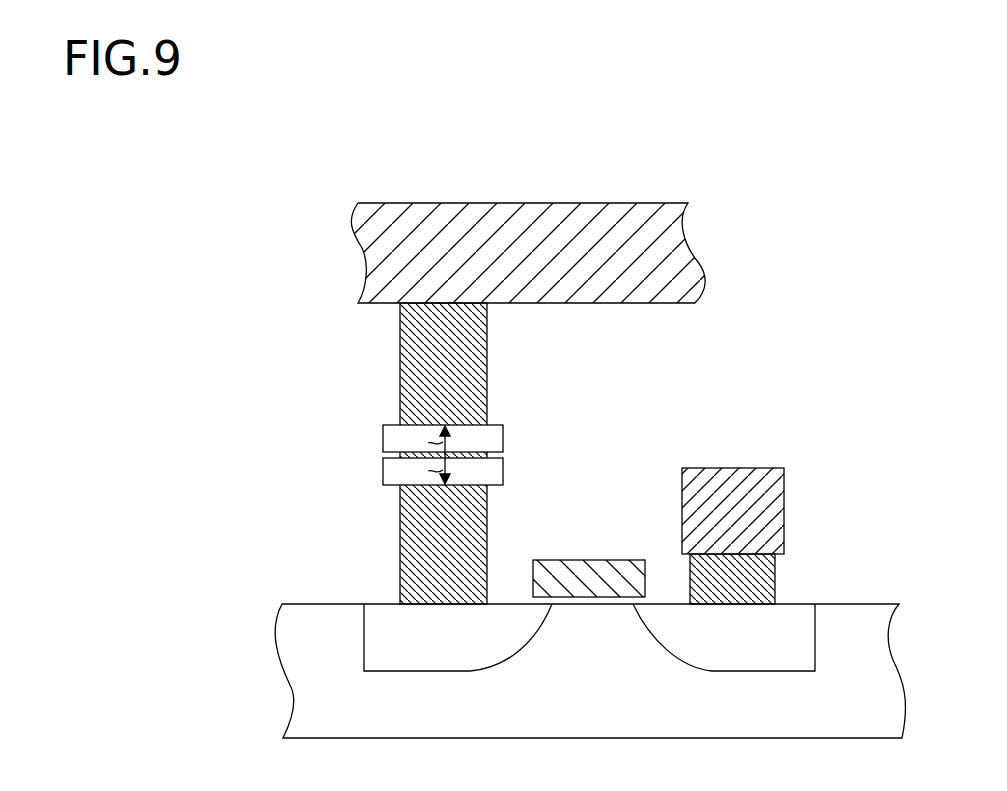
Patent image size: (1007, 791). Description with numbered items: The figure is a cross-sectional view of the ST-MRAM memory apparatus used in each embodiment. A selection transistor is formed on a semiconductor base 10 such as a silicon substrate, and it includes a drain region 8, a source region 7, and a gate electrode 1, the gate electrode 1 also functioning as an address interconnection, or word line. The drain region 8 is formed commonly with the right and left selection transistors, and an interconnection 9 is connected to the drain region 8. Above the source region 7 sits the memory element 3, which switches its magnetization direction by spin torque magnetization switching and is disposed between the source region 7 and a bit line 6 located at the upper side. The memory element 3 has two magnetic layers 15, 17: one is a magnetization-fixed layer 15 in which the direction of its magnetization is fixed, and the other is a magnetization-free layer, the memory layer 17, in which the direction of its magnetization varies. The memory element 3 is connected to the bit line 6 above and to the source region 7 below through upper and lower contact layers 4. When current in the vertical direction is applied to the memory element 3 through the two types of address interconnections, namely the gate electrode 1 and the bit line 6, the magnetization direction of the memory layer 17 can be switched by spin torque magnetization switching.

The gate electrode 1 is at (616, 572).
The memory element 3 is at (467, 456).
The contact layer 4 is at (412, 340).
The bit line 6 is at (385, 253).
The source region 7 is at (393, 640).
The drain region 8 is at (792, 642).
The interconnection 9 is at (762, 504).
The semiconductor base 10 is at (867, 707).
The magnetization-fixed layer 15 is at (503, 472).
The memory layer 17 is at (503, 438).